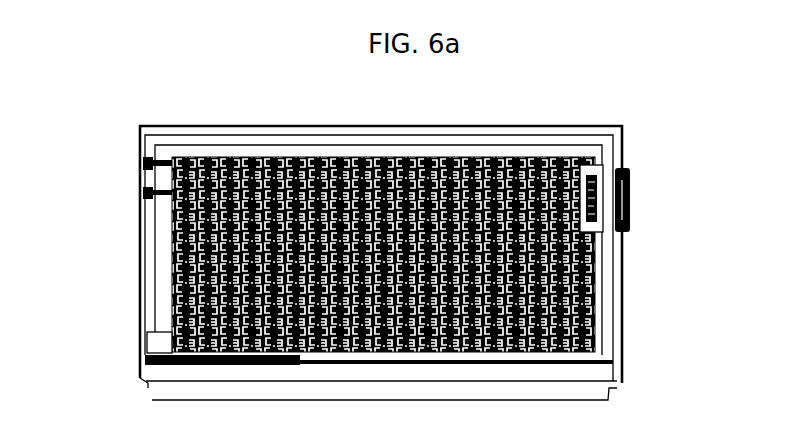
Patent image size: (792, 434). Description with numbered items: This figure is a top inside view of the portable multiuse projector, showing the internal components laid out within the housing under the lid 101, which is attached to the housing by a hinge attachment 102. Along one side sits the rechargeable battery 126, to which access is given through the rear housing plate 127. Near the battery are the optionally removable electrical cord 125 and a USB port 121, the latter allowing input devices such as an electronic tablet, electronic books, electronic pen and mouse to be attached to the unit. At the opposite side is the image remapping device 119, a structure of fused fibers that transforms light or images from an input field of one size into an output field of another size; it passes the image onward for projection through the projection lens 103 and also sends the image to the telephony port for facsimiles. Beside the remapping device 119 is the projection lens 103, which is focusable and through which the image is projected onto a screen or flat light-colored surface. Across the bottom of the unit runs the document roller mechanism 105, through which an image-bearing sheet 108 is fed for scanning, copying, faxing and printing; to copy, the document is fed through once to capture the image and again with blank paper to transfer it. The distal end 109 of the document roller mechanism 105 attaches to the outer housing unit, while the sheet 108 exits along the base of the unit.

The lid 101 is at (623, 303).
The hinge attachment 102 is at (622, 131).
The projection lens 103 is at (631, 190).
The document roller mechanism 105 is at (145, 366).
The image-bearing sheet 108 is at (612, 398).
The distal end of document roller mechanism 109 is at (622, 370).
The image remapping device 119 is at (581, 165).
The USB port 121 is at (146, 194).
The removable electrical cord 125 is at (146, 162).
The rechargeable battery 126 is at (203, 157).
The rear housing plate 127 is at (145, 270).